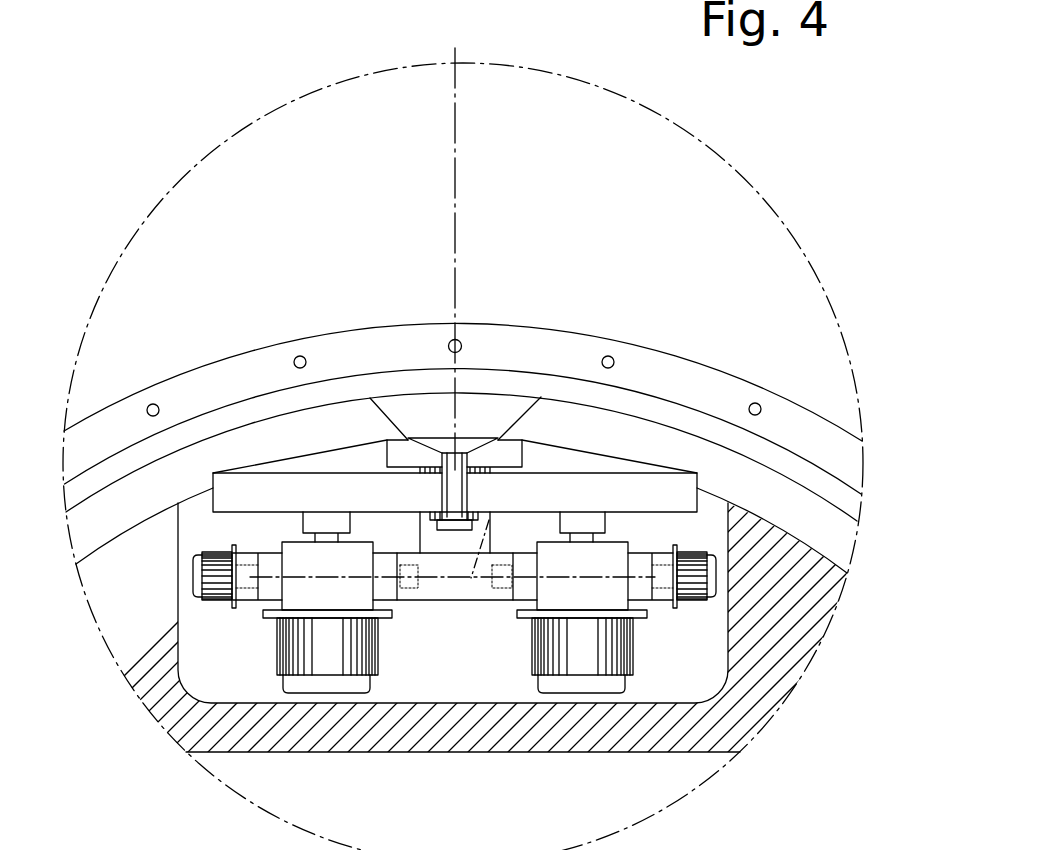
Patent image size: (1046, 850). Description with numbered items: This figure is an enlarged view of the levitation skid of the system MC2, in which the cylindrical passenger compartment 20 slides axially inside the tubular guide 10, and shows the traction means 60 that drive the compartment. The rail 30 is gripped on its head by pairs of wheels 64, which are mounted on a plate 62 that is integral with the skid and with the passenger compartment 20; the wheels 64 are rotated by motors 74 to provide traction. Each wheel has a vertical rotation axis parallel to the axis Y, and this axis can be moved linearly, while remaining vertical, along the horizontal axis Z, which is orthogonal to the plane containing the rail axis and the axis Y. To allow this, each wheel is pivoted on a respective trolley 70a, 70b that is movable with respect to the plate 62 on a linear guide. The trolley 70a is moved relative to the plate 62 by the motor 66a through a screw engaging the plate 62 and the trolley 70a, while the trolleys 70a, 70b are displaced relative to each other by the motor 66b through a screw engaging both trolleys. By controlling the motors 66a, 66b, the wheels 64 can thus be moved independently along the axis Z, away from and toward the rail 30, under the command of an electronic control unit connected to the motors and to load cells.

The levitation system MC2 is at (163, 143).
The axis Y is at (455, 233).
The axis Z is at (487, 532).
The tubular guide 10 is at (463, 408).
The passenger compartment 20 is at (461, 457).
The rail 30 is at (435, 435).
The traction means 60 is at (348, 445).
The plate 62 is at (463, 597).
The wheels 64 is at (225, 488).
The motor 66a is at (220, 597).
The motor 66b is at (700, 600).
The trolley 70a is at (289, 555).
The trolley 70b is at (610, 597).
The motors 74 is at (370, 666).